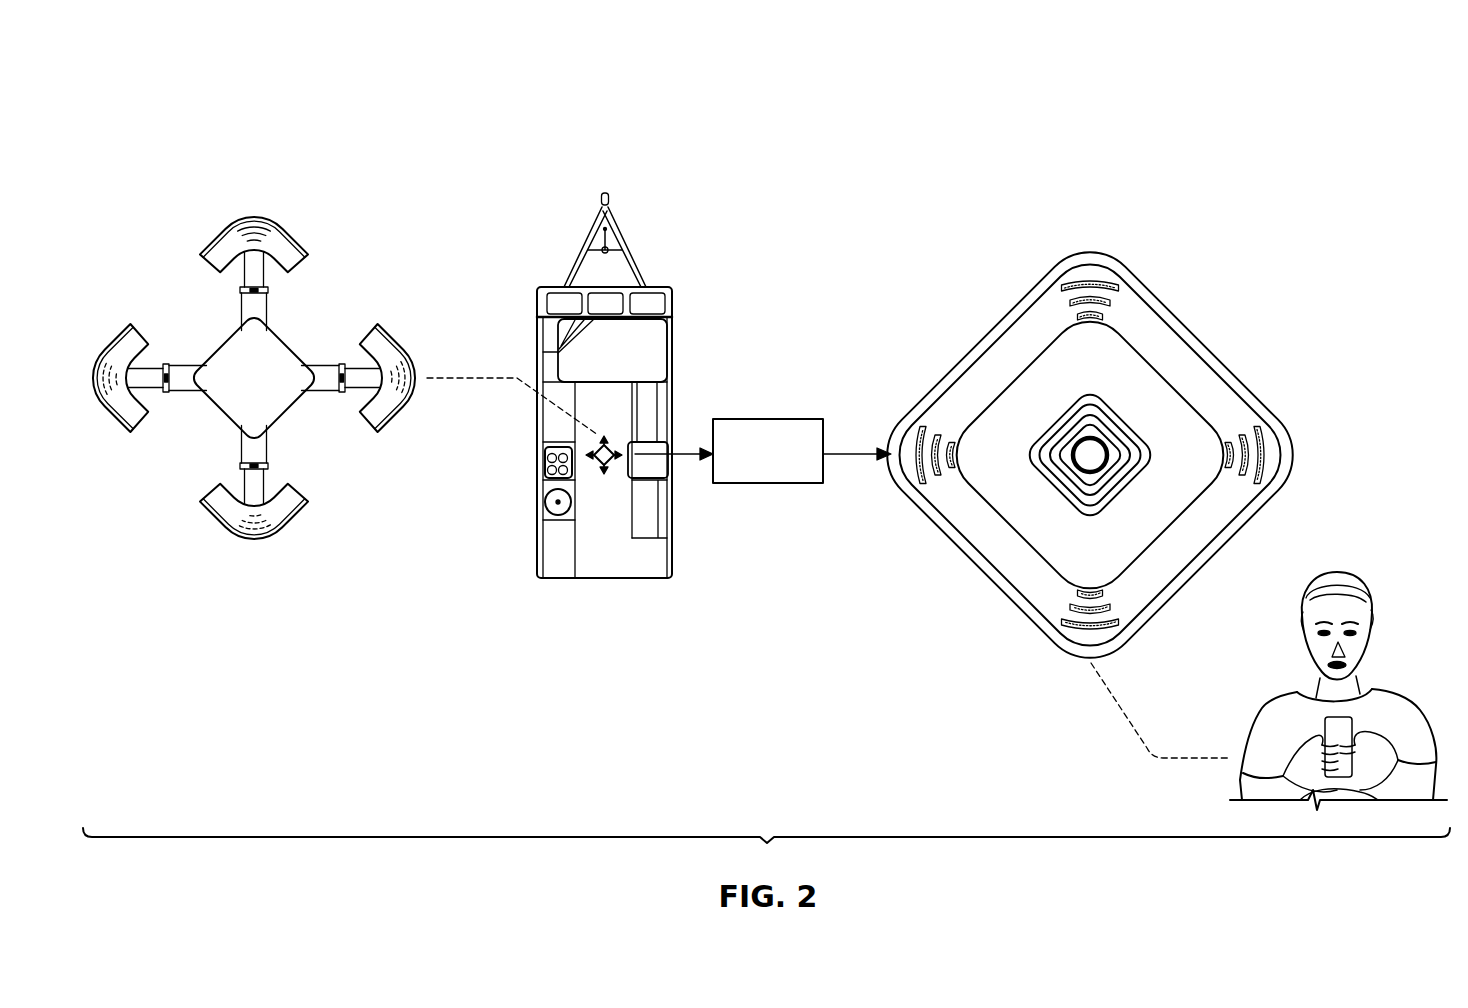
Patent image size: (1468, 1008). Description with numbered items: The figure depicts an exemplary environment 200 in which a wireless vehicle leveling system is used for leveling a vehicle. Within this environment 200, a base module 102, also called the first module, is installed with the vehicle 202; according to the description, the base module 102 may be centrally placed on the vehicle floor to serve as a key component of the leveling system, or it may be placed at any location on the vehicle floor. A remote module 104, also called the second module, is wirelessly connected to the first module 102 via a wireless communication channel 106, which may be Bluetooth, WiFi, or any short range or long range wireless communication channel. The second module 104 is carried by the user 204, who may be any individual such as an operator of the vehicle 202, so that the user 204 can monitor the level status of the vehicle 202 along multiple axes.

The environment 200 is at (226, 64).
The base module 102 is at (253, 208).
The vehicle 202 is at (605, 183).
The wireless communication channel 106 is at (770, 419).
The remote module 104 is at (1089, 246).
The user 204 is at (1337, 568).